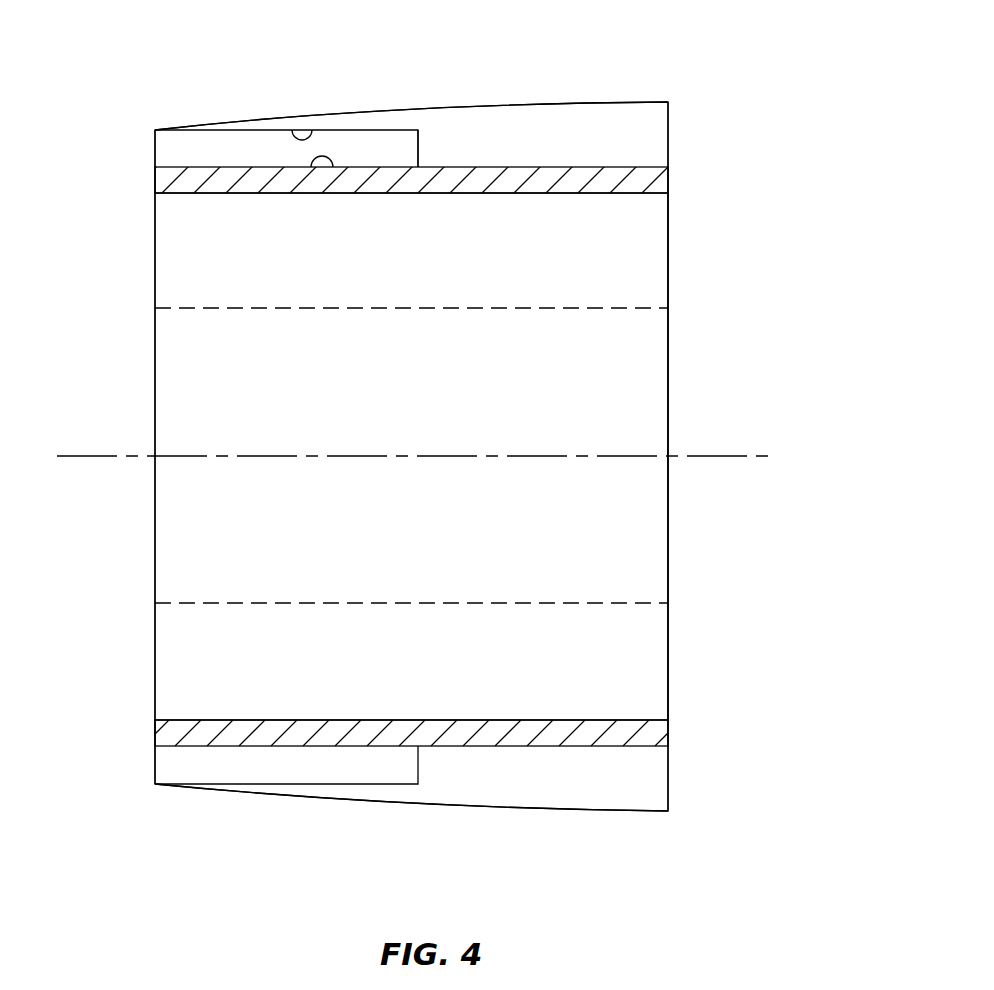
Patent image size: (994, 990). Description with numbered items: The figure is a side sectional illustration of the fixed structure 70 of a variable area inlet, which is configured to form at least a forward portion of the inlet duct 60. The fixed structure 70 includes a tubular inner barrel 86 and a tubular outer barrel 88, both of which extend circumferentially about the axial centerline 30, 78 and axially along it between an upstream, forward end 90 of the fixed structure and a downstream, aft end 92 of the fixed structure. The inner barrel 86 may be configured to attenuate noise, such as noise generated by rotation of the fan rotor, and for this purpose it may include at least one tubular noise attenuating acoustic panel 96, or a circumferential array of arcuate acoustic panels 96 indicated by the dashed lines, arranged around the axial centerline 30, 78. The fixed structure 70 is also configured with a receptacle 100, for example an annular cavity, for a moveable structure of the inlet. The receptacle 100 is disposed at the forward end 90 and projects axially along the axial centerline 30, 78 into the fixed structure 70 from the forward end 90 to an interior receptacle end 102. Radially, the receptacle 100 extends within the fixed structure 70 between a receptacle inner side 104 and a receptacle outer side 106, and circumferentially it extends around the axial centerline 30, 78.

The fixed structure 70 is at (724, 87).
The outer barrel 88 is at (446, 95).
The forward end 90 is at (155, 180).
The aft end 92 is at (670, 182).
The inner barrel 86 is at (413, 212).
The acoustic panel 96 is at (193, 212).
The receptacle 100 is at (235, 145).
The interior receptacle end 102 is at (418, 147).
The receptacle inner side 104 is at (315, 172).
The receptacle outer side 106 is at (292, 129).
The inlet duct 60 is at (570, 366).
The axial centerline 30 is at (433, 408).
The axial centerline 78 is at (757, 456).